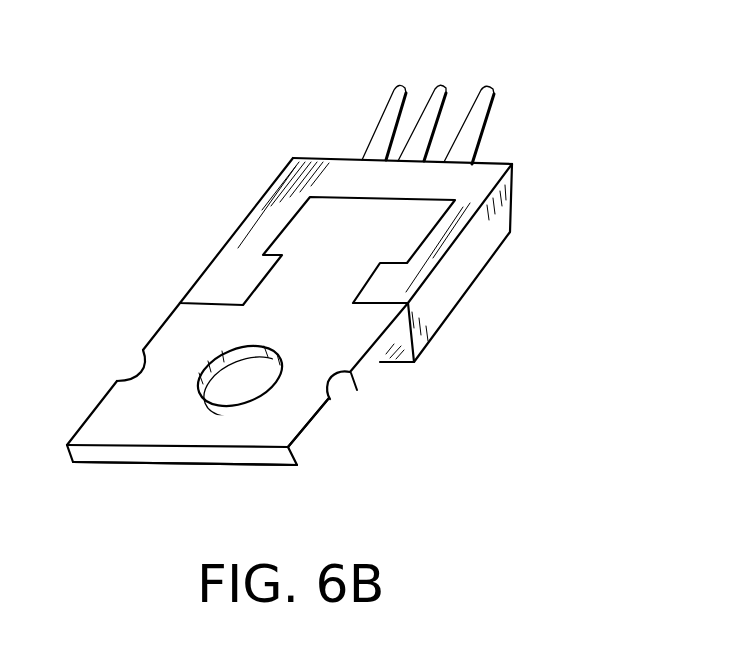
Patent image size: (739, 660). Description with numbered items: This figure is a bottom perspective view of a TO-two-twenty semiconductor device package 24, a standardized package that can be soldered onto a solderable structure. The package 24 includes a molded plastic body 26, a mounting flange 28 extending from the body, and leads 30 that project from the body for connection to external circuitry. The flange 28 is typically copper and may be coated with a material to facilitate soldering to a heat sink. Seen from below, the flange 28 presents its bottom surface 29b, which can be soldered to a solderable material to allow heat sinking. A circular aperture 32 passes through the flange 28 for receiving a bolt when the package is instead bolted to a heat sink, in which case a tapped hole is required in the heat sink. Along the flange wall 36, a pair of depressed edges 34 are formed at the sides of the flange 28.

The TO-220 semiconductor device package 24 is at (178, 215).
The molded plastic body 26 is at (468, 273).
The mounting flange 28 is at (67, 453).
The bottom surface 29b is at (238, 433).
The leads 30 is at (520, 67).
The circular aperture 32 is at (273, 348).
The depressed edges 34 is at (138, 372).
The flange wall 36 is at (312, 432).